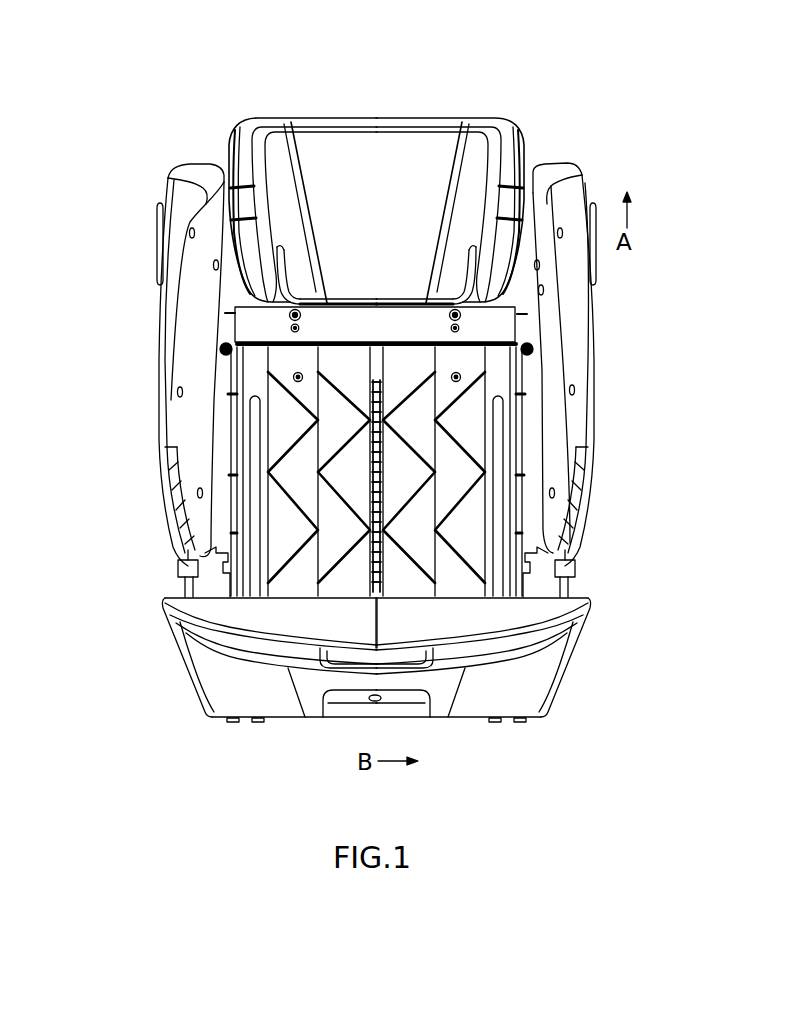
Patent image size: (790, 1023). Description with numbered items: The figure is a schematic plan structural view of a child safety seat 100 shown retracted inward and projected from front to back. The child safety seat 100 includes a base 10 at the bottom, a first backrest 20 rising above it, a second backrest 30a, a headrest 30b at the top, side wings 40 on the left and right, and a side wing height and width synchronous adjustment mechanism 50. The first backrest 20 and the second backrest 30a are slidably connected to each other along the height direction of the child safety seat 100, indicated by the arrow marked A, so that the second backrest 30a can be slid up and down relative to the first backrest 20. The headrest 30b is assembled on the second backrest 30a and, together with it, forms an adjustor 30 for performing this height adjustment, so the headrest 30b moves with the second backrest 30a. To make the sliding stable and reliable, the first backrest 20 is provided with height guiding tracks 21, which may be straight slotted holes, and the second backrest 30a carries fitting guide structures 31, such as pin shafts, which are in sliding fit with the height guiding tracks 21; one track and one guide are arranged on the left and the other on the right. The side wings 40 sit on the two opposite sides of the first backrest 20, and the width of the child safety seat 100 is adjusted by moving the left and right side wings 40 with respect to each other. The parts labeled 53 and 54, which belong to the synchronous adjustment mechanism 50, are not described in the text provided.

The child safety seat 100 is at (122, 36).
The base 10 is at (200, 677).
The first backrest 20 is at (252, 356).
The height guiding track 21 is at (249, 406).
The adjustor 30 is at (97, 190).
The second backrest 30a is at (248, 332).
The headrest 30b is at (250, 234).
The fitting guide structure 31 is at (250, 593).
The side wing 40 is at (193, 168).
The side wing height and width synchronous adjustment mechanism 50 is at (648, 296).
The fastener 53 is at (298, 325).
The guide pin 54 is at (300, 374).